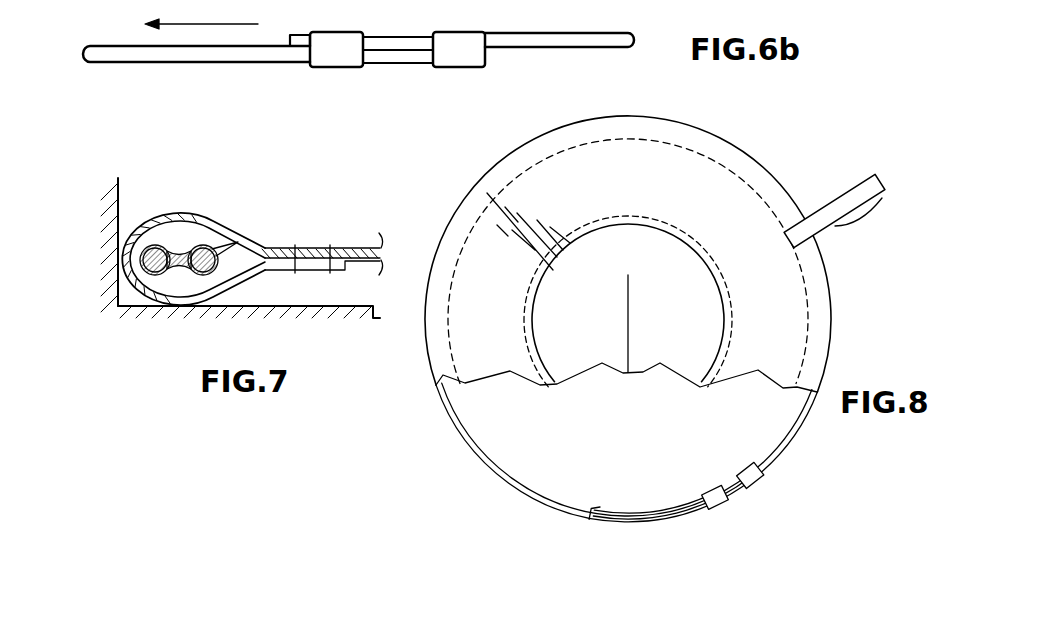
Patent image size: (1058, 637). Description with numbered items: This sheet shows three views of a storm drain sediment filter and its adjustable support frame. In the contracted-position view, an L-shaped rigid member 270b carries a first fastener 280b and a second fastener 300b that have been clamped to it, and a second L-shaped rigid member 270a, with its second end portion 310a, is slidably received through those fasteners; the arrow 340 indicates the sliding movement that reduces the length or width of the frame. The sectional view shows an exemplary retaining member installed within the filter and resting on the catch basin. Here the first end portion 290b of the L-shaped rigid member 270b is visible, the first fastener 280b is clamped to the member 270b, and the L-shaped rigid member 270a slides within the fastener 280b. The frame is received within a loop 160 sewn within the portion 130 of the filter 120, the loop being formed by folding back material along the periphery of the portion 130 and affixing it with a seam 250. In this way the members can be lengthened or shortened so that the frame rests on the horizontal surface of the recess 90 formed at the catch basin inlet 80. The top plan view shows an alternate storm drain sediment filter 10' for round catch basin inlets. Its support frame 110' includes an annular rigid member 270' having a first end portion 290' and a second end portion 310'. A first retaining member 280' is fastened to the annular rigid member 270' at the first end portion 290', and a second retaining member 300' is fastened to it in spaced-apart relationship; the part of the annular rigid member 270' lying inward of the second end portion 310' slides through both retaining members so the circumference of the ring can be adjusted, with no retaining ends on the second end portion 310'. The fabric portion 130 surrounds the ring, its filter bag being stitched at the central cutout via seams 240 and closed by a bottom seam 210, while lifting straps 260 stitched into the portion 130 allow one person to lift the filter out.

In FIG. 6b, the arrow 340 is at (205, 24).
In FIG. 6b, the second end portion 310a is at (291, 36).
In FIG. 6b, the second fastener 300b is at (338, 32).
In FIG. 6b, the first fastener 280b is at (455, 32).
In FIG. 7, the first fastener 280b is at (178, 252).
In FIG. 6b, the L-shaped rigid member 270a is at (556, 40).
In FIG. 7, the L-shaped rigid member 270a is at (202, 245).
In FIG. 6b, the L-shaped rigid member 270b is at (176, 59).
In FIG. 7, the L-shaped rigid member 270b is at (157, 245).
In FIG. 6b, the first end portion 290b is at (488, 67).
In FIG. 7, the first end portion 290b is at (153, 257).
In FIG. 7, the loop 160 is at (241, 234).
In FIG. 8, the loop 160 is at (768, 159).
In FIG. 7, the filter 120 is at (353, 244).
In FIG. 8, the filter 120 is at (613, 167).
In FIG. 7, the seam 250 is at (306, 270).
In FIG. 8, the seam 250 is at (808, 302).
In FIG. 7, the catch basin inlet 80 is at (375, 313).
In FIG. 7, the recess 90 is at (230, 306).
In FIG. 8, the seams 240 is at (678, 226).
In FIG. 8, the lifting straps 260 is at (886, 183).
In FIG. 8, the portion 130 is at (773, 278).
In FIG. 8, the bottom seam 210 is at (630, 330).
In FIG. 8, the storm drain sediment filter 10' is at (594, 423).
In FIG. 8, the support frame 110' is at (626, 452).
In FIG. 8, the second end portion 310' is at (598, 485).
In FIG. 8, the second retaining member 300' is at (701, 465).
In FIG. 8, the first retaining member 280' is at (751, 450).
In FIG. 8, the annular rigid member 270' is at (724, 469).
In FIG. 8, the first end portion 290' is at (802, 483).